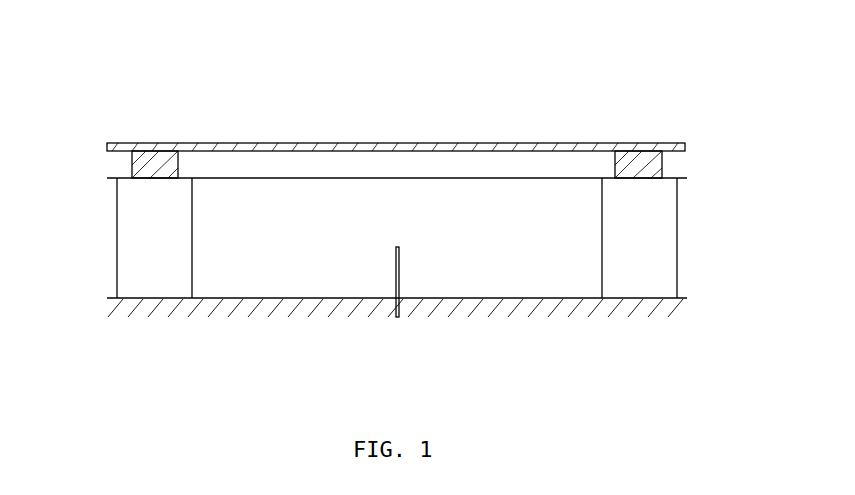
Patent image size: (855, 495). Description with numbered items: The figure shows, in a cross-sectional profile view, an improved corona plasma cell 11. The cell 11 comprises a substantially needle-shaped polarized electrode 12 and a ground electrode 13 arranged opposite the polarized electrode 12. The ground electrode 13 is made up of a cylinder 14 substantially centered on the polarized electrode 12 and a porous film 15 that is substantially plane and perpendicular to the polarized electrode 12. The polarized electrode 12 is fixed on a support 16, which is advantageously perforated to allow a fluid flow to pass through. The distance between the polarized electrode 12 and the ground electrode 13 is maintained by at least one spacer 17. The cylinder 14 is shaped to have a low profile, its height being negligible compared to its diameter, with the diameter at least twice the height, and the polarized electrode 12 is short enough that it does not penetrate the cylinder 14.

The corona plasma cell 11 is at (397, 171).
The polarized electrode 12 is at (348, 260).
The ground electrode 13 is at (435, 128).
The cylinder 14 is at (397, 230).
The porous film 15 is at (396, 112).
The support 16 is at (397, 338).
The spacer 17 is at (117, 267).